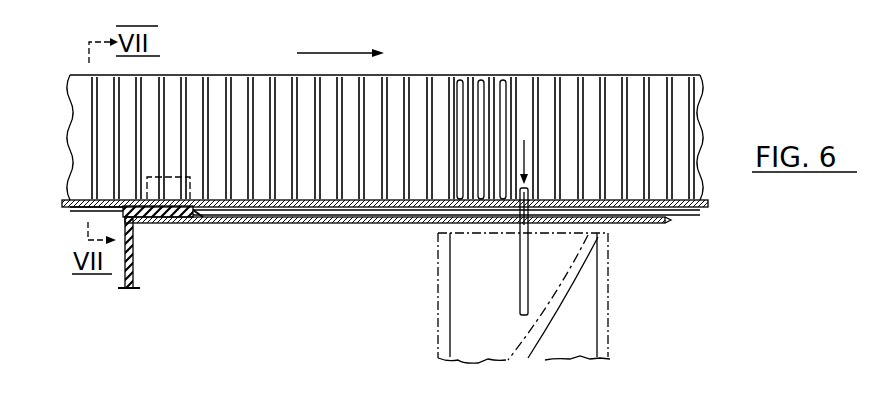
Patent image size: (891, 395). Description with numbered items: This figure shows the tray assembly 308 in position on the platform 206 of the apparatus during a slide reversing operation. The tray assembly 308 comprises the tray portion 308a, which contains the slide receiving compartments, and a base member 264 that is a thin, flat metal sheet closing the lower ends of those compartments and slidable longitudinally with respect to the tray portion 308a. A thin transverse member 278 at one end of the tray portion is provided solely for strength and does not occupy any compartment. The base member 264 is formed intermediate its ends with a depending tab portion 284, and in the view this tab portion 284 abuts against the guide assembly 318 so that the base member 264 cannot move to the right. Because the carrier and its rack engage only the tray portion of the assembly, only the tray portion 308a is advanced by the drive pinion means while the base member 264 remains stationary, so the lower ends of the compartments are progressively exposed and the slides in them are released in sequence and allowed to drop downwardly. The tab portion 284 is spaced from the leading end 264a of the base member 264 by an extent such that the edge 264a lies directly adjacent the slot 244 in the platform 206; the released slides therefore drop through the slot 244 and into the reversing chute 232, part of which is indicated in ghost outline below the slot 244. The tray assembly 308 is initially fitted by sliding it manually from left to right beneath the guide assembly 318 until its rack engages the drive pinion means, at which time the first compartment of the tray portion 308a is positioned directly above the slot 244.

The platform 206 is at (296, 225).
The reversing chute 232 is at (609, 303).
The slot 244 is at (549, 222).
The base member 264 is at (353, 208).
The leading end of base member 264a is at (519, 237).
The transverse member 278 is at (460, 80).
The tab portion 284 is at (134, 223).
The tray assembly 308 is at (570, 58).
The tray portion 308a is at (683, 75).
The guide assembly 318 is at (200, 218).